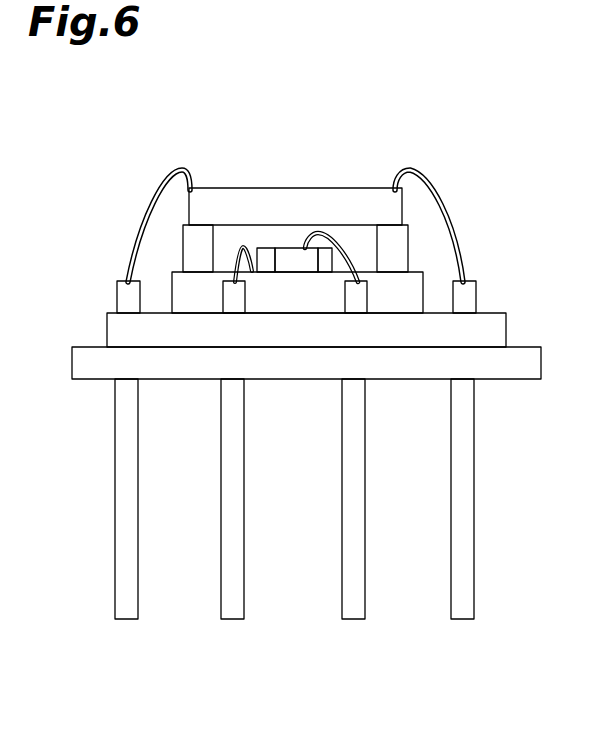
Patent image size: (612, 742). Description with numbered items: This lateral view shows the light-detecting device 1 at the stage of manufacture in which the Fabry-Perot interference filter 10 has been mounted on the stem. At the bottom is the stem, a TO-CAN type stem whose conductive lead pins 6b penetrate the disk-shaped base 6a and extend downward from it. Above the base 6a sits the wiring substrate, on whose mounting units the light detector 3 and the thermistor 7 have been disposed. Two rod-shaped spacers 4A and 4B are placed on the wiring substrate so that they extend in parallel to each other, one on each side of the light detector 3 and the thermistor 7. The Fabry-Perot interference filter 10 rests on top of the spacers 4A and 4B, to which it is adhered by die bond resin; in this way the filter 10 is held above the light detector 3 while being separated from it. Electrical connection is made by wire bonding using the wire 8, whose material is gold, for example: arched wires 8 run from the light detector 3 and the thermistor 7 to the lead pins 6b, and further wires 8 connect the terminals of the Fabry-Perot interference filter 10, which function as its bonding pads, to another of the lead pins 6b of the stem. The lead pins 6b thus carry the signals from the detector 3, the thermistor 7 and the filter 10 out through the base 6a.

The semiconductor device 1 is at (486, 163).
The light detector 3 is at (265, 255).
The spacer 4A is at (195, 243).
The spacer 4B is at (400, 255).
The base 6a is at (493, 332).
The lead pins 6b is at (233, 619).
The thermistor 7 is at (292, 255).
The wire 8 is at (148, 195).
The Fabry-Perot interference filter 10 is at (363, 202).